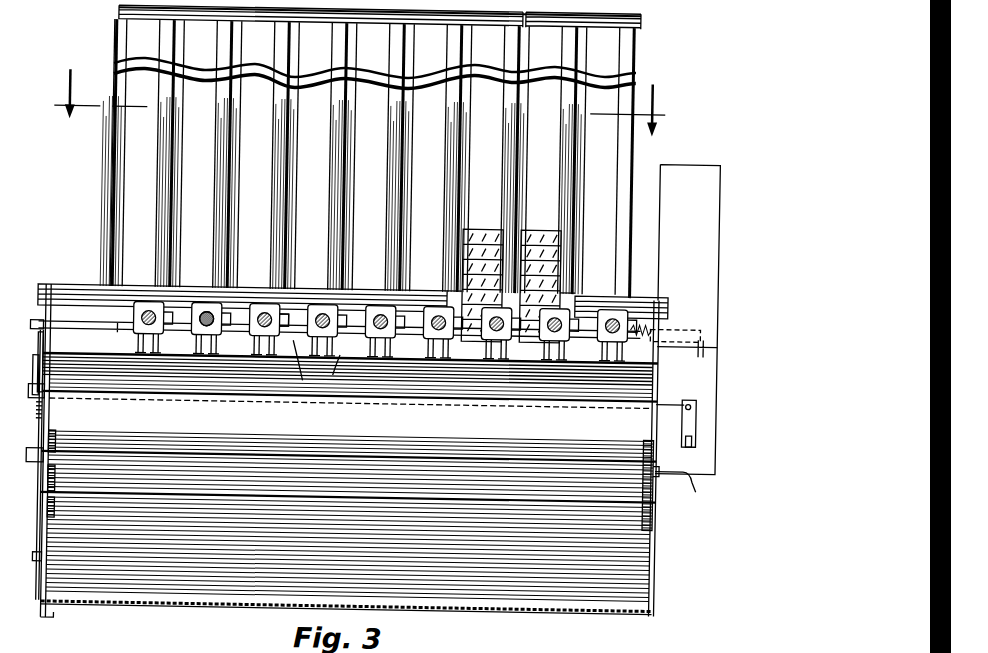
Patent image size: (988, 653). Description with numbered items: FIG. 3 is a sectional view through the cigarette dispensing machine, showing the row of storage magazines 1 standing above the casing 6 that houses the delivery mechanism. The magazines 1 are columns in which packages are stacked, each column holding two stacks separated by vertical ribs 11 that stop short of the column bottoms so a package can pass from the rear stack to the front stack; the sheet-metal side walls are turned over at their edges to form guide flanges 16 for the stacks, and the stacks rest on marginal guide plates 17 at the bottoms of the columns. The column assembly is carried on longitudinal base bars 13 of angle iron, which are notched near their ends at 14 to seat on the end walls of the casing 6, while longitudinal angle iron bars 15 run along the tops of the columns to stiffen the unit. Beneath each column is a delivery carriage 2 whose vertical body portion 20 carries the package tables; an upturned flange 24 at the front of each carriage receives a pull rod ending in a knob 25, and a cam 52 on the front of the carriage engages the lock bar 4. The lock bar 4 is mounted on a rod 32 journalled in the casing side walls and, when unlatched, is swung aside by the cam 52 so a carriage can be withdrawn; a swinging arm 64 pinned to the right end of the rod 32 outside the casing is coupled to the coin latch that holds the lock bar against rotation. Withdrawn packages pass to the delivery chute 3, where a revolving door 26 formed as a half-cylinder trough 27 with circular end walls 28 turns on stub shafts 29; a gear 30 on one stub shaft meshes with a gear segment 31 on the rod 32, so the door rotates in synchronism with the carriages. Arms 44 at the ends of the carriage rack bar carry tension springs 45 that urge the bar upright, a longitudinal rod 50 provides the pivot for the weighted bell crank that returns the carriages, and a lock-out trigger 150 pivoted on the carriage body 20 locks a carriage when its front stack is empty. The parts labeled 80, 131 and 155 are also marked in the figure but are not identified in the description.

The storage magazines 1 is at (390, 159).
The delivery carriages 2 is at (156, 308).
The delivery chute 3 is at (490, 598).
The lock bar 4 is at (668, 362).
The casing 6 is at (38, 540).
The vertical ribs 11 is at (283, 219).
The longitudinal base bars 13 is at (85, 300).
The notches 14 is at (30, 323).
The longitudinal angle iron bars 15 is at (622, 8).
The guide flanges 16 is at (220, 182).
The marginal guide plates 17 is at (316, 366).
The vertical body portion 20 is at (494, 340).
The upturned flanges 24 is at (272, 313).
The knobs 25 is at (210, 313).
The revolving door 26 is at (400, 408).
The trough 27 is at (448, 413).
The circular end walls 28 is at (651, 475).
The stub shafts 29 is at (684, 488).
The gear 30 is at (38, 456).
The gear segment 31 is at (38, 344).
The rod 32 is at (680, 393).
The arms 44 is at (33, 366).
The tension springs 45 is at (40, 409).
The longitudinal rod 50 is at (40, 557).
The cam 52 is at (31, 391).
The swinging arm 64 is at (698, 415).
The lever 80 is at (696, 435).
The strip 131 is at (93, 300).
The lock-out trigger 150 is at (506, 372).
The rod 155 is at (703, 341).